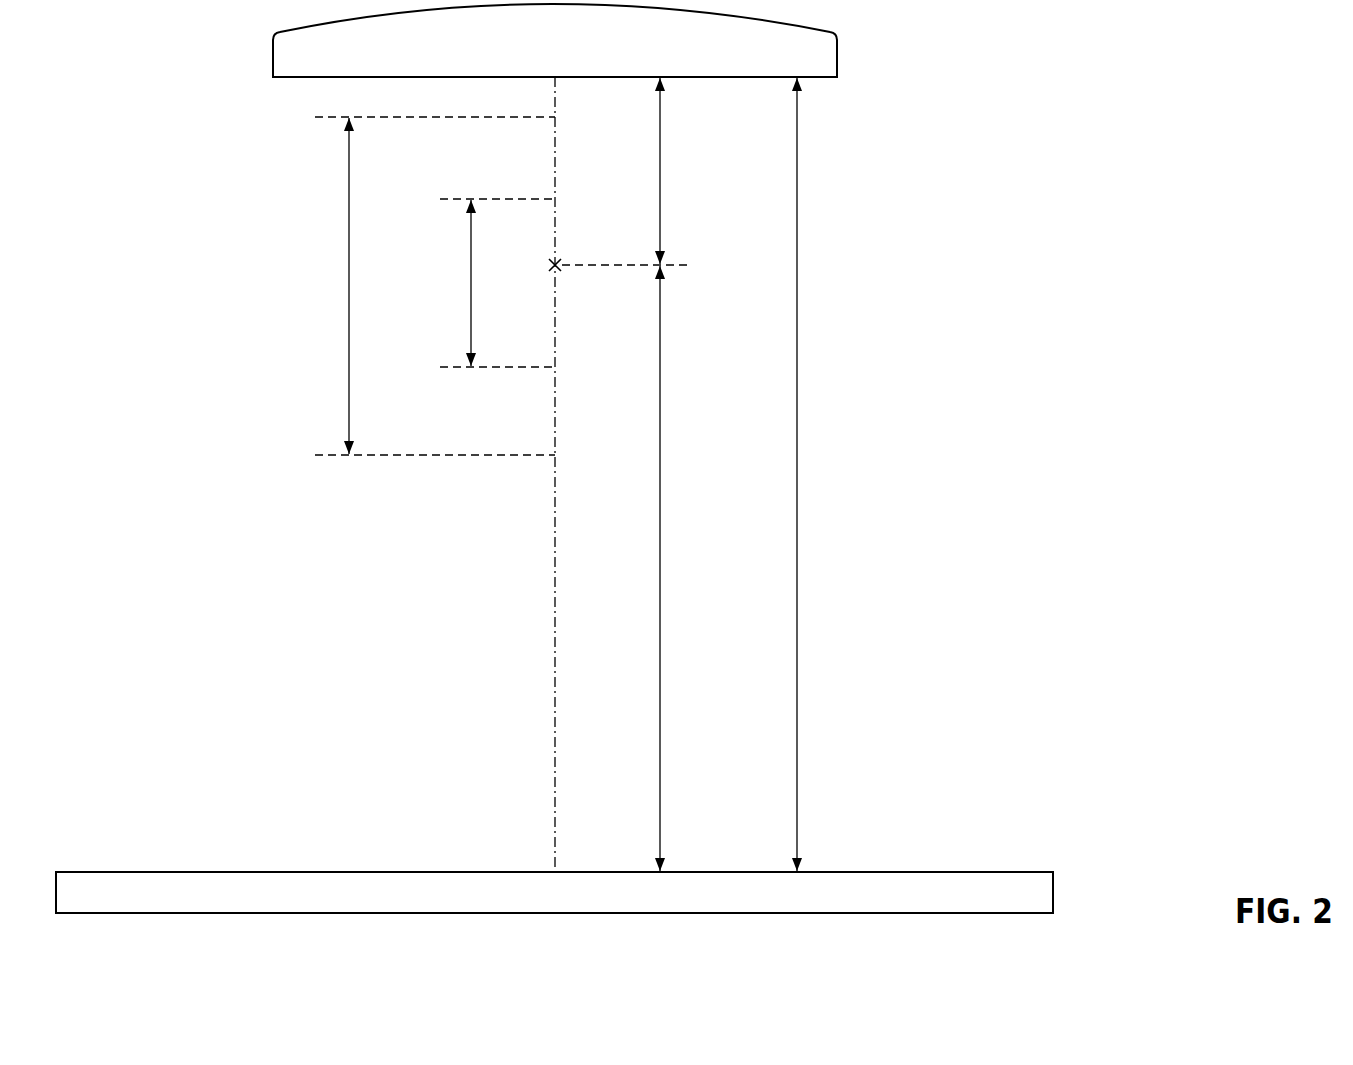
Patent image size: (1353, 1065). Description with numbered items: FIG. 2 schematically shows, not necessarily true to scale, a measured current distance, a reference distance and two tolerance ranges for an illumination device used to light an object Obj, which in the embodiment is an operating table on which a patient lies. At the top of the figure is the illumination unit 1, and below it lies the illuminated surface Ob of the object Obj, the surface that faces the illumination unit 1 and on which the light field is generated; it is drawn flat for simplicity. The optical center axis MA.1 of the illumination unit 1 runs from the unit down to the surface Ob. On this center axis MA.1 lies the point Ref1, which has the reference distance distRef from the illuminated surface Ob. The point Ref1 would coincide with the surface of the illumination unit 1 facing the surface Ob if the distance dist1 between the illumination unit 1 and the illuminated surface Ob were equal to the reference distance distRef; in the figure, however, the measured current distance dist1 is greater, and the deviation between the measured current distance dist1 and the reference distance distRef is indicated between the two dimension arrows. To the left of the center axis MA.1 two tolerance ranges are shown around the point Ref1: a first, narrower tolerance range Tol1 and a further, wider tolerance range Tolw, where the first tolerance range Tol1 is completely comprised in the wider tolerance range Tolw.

The illumination unit 1 is at (855, 57).
The object Obj is at (860, 885).
The illuminated surface Ob is at (990, 870).
The optical center axis MA.1 is at (555, 518).
The wider tolerance range Tolw is at (349, 237).
The first tolerance range Tol1 is at (471, 270).
The reference point Ref1 is at (561, 262).
The reference distance distRef is at (660, 393).
The measured current distance dist1 is at (797, 280).